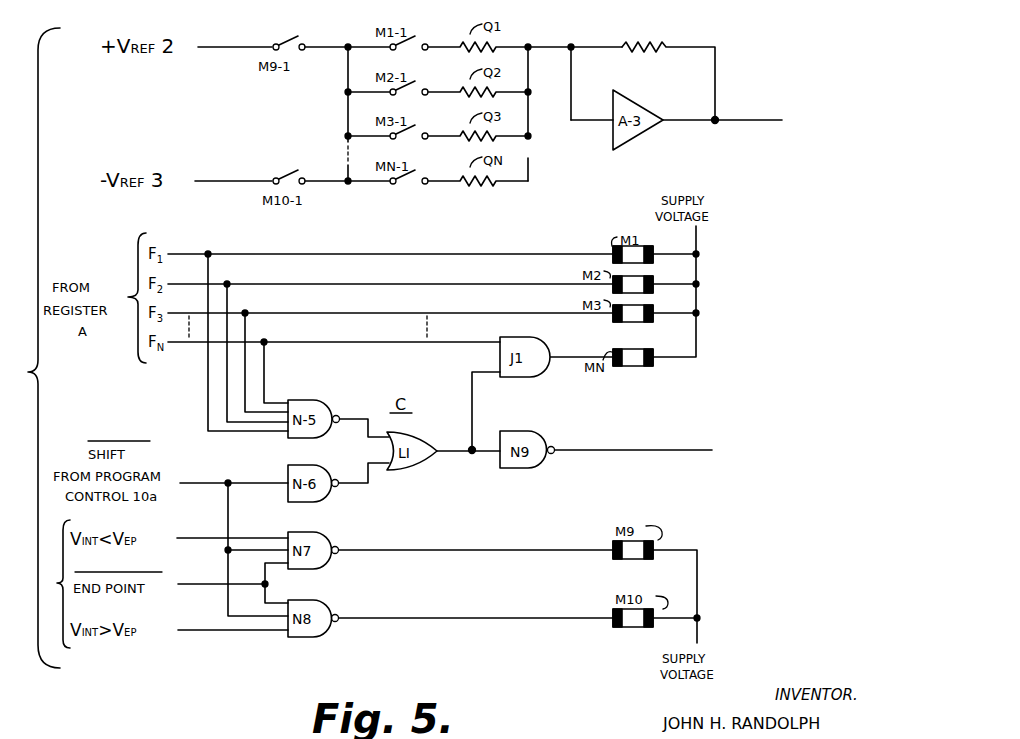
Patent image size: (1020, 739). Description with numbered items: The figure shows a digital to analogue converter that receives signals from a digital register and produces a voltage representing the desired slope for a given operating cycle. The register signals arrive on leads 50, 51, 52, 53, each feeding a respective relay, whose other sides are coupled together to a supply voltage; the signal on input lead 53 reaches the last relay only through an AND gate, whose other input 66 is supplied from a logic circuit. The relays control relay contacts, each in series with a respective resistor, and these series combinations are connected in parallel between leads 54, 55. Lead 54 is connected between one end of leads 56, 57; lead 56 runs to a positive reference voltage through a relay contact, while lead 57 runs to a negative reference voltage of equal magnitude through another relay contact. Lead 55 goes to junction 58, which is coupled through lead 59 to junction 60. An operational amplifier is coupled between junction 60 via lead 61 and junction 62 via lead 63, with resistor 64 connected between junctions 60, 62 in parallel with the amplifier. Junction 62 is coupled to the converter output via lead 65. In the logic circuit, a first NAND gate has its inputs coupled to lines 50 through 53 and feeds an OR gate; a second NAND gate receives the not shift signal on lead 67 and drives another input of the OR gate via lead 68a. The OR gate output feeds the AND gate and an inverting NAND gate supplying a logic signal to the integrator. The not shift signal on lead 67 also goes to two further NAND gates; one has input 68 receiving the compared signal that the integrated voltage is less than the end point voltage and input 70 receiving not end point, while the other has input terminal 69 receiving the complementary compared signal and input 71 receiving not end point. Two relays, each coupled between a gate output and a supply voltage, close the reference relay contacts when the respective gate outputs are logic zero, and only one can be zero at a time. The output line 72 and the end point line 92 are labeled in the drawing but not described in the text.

The lead 50 is at (365, 253).
The lead 51 is at (355, 283).
The lead 52 is at (355, 312).
The input lead 53 is at (355, 341).
The lead 54 is at (340, 84).
The lead 55 is at (528, 68).
The lead 56 is at (333, 46).
The lead 57 is at (330, 183).
The junction 58 is at (528, 44).
The lead 59 is at (553, 46).
The junction 60 is at (573, 50).
The lead 61 is at (590, 124).
The junction 62 is at (718, 124).
The lead 63 is at (684, 122).
The resistor 64 is at (652, 43).
The lead 65 is at (755, 120).
The input 66 is at (485, 376).
The lead 67 is at (205, 483).
The input 68 is at (282, 536).
The lead 68a is at (373, 477).
The input terminal 69 is at (265, 632).
The input 70 is at (283, 571).
The input 71 is at (283, 600).
The N9 output to integrator 72 is at (612, 449).
The end point signal line 92 is at (213, 582).